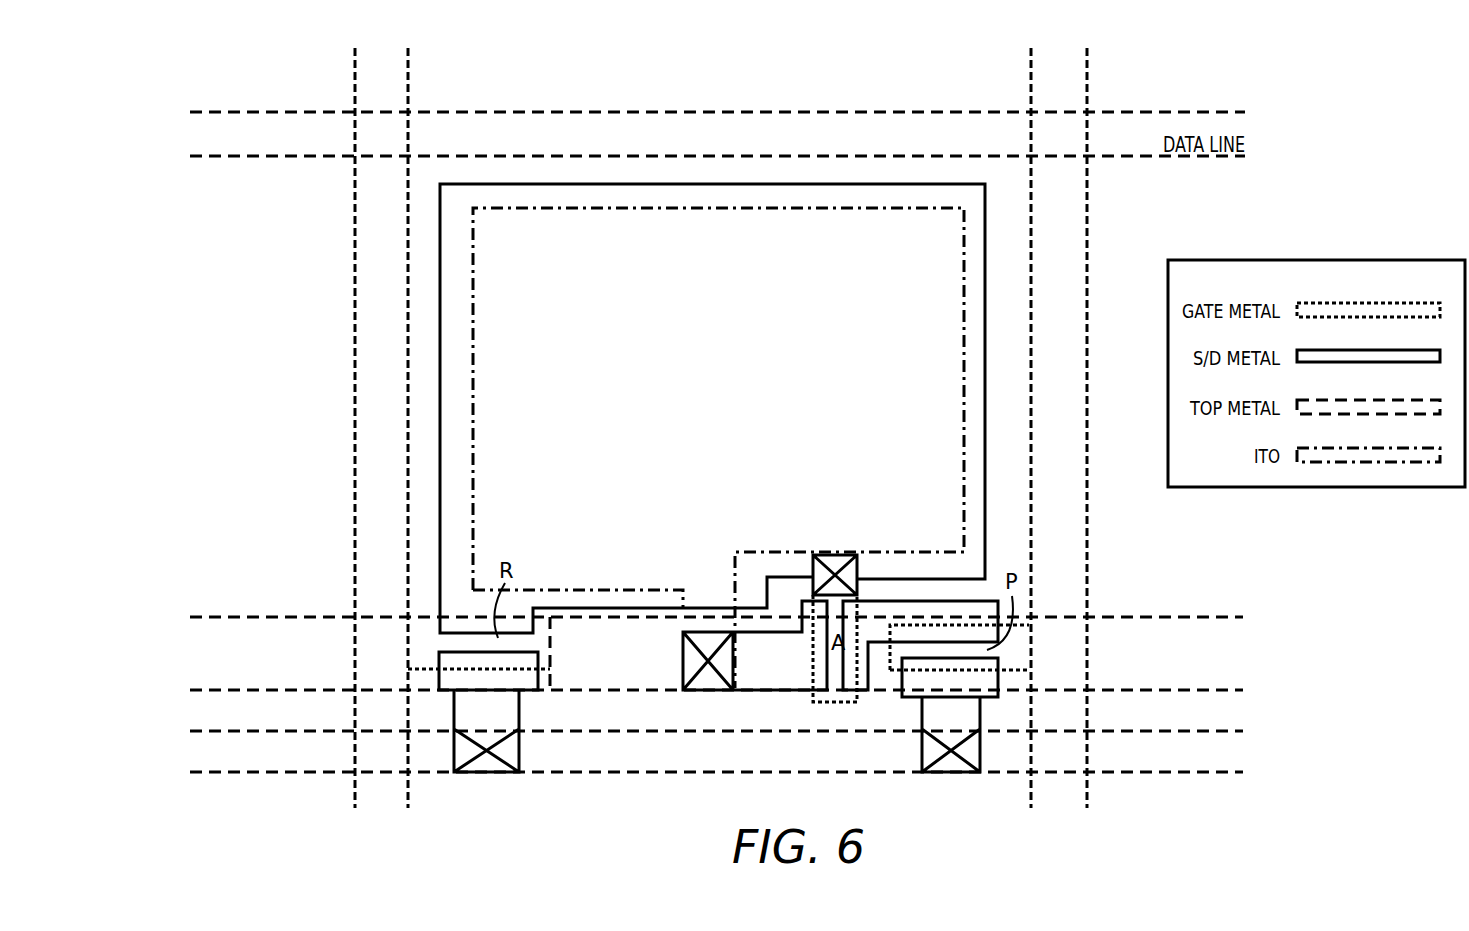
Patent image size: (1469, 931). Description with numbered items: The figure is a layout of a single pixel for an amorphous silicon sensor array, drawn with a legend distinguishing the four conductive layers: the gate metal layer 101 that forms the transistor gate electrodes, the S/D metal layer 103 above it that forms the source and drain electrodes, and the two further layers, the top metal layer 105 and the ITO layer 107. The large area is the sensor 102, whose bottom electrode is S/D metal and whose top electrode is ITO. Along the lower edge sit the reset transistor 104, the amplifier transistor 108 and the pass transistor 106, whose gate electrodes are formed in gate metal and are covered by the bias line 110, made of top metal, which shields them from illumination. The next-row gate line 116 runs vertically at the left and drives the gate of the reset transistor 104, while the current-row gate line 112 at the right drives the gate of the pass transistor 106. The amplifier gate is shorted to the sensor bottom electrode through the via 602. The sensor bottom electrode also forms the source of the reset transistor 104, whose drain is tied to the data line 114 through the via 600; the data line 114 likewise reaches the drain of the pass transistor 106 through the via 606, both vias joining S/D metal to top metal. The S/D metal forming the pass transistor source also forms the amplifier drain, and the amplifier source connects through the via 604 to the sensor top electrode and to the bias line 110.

The gate metal layer 101 is at (1393, 310).
The S/D metal layer 103 is at (1393, 357).
The top metal layer 105 is at (1393, 405).
The ITO layer 107 is at (1393, 453).
The sensor 102 is at (735, 315).
The reset transistor 104 is at (522, 642).
The pass transistor 106 is at (987, 650).
The amplifier transistor 108 is at (837, 677).
The bias line 110 is at (1197, 623).
The gate line Gn 112 is at (1062, 100).
The data line 114 is at (1183, 747).
The gate line Gn+1 116 is at (385, 97).
The via 600 is at (495, 767).
The via 602 is at (833, 555).
The via 604 is at (683, 672).
The via 606 is at (953, 768).